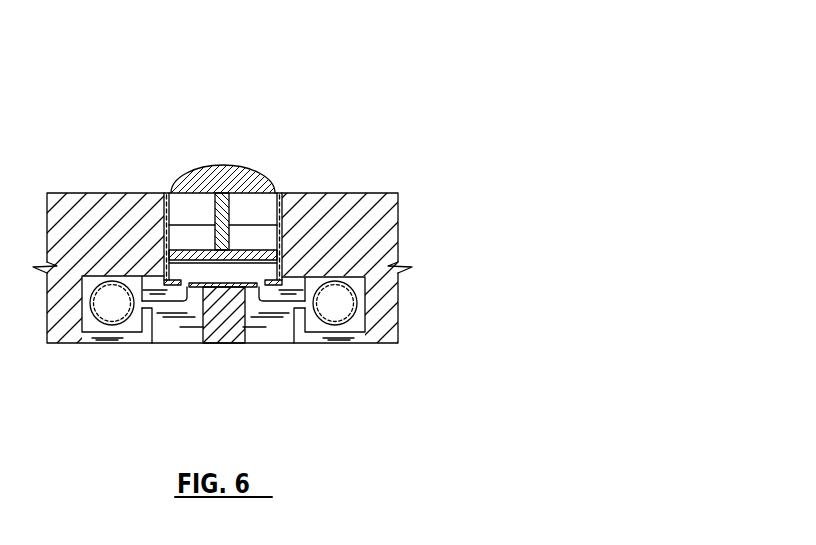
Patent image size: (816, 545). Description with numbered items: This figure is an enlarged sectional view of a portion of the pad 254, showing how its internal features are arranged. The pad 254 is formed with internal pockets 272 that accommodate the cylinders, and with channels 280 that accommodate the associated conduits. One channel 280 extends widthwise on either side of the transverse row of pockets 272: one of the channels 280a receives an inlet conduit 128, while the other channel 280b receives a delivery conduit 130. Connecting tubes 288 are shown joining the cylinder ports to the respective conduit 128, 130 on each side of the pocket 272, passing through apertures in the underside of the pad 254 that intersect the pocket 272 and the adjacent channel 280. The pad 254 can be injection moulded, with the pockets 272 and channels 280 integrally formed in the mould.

The pad 254 is at (275, 231).
The pocket 272 is at (284, 257).
The connecting tube 288 is at (155, 301).
The channel 280 is at (278, 354).
The channel 280a is at (142, 354).
The channel 280b is at (399, 348).
The inlet conduit 128 is at (97, 328).
The delivery conduit 130 is at (337, 326).